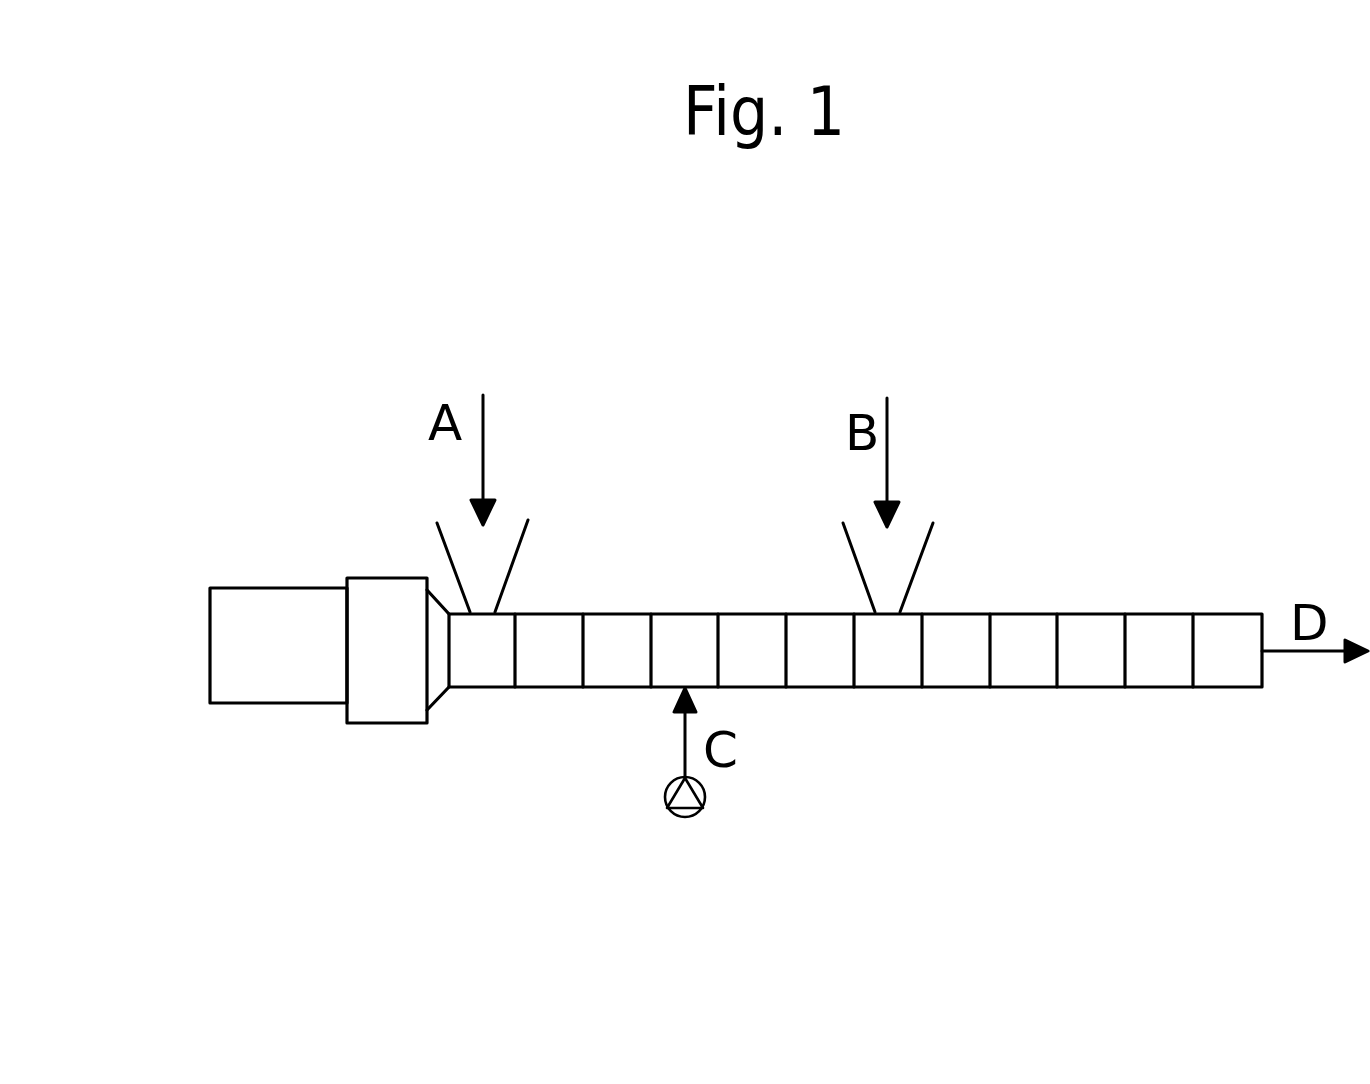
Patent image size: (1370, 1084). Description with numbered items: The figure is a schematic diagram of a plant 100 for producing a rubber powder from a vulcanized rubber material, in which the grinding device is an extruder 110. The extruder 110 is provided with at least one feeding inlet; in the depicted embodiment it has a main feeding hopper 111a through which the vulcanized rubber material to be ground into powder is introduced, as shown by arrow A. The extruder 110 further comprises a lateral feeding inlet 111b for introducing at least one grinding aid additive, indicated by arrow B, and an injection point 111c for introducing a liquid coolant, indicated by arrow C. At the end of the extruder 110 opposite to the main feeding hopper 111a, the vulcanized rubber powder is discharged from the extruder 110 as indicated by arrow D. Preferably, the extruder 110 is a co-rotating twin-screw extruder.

The plant 100 is at (283, 497).
The extruder 110 is at (1037, 672).
The main feeding hopper 111a is at (520, 545).
The lateral feeding inlet 111b is at (925, 542).
The injection point 111c is at (667, 803).